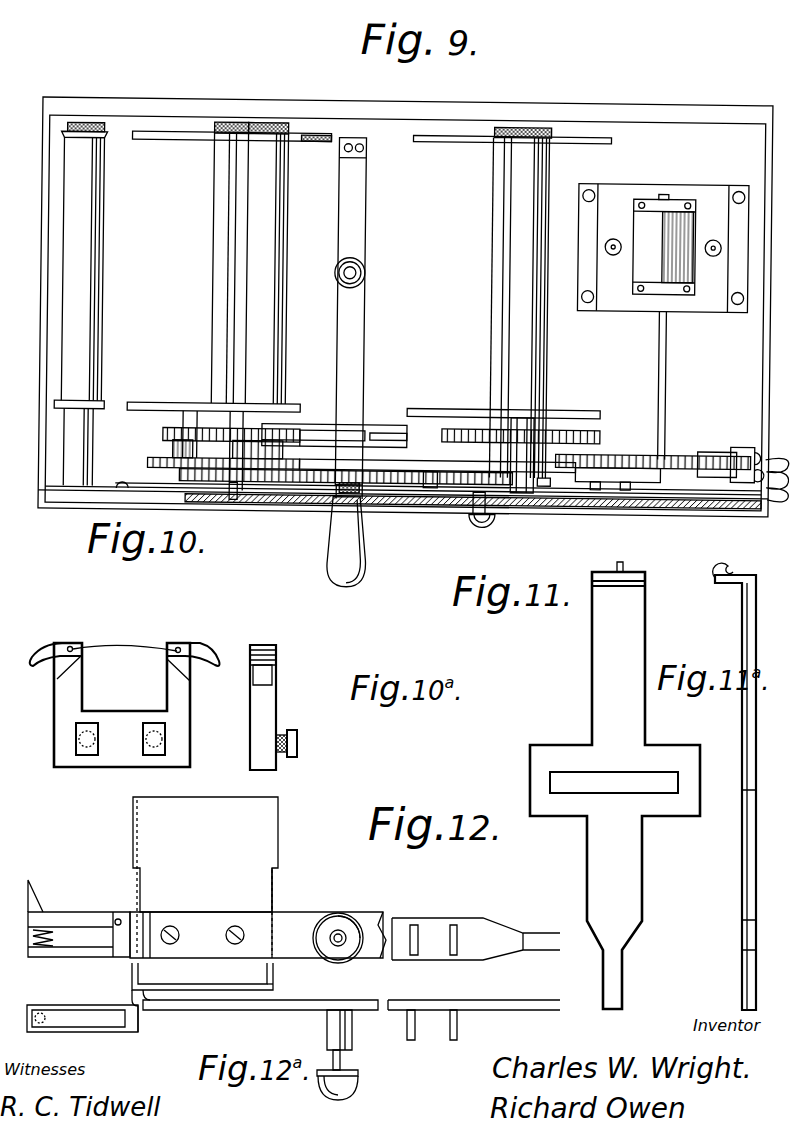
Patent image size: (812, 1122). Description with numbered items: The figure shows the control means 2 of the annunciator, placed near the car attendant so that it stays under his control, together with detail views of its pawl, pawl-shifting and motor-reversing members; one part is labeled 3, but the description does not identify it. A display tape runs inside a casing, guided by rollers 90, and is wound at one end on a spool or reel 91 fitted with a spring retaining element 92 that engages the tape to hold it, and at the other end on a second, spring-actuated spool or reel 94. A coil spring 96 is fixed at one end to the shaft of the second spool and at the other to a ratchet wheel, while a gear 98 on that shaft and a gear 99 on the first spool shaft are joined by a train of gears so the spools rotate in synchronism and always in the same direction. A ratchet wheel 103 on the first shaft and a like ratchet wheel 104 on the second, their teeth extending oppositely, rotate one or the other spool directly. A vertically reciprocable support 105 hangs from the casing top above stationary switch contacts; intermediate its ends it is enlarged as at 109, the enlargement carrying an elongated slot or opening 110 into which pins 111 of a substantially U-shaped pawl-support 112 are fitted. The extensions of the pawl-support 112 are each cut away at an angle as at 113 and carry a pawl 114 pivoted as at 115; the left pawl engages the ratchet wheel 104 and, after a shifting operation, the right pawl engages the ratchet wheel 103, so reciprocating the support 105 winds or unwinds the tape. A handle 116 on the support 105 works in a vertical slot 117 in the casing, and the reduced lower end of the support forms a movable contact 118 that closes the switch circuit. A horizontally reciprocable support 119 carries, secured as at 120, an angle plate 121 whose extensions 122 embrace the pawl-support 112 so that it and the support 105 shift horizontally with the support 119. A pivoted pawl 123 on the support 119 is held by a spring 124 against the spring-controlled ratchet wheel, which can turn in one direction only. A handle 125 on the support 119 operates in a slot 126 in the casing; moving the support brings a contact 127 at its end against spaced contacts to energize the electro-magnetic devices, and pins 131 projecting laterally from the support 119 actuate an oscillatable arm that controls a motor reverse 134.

In FIG. 9, the control means 2 is at (608, 102).
In FIG. 9, the base plate 3 is at (683, 104).
In FIG. 9, the rollers 90 is at (95, 196).
In FIG. 9, the spool or reel 91 is at (495, 245).
In FIG. 9, the spring retaining element 92 is at (230, 255).
In FIG. 9, the second spool or reel 94 is at (209, 212).
In FIG. 9, the spring 96 is at (194, 450).
In FIG. 9, the gear 98 is at (240, 490).
In FIG. 9, the gear 99 is at (545, 482).
In FIG. 9, the ratchet wheel 103 is at (562, 424).
In FIG. 9, the ratchet wheel 104 is at (272, 421).
In FIG. 11, the vertically reciprocable support 105 is at (670, 846).
In FIG. 11A, the vertically reciprocable support 105 is at (752, 623).
In FIG. 11, the enlargement 109 is at (747, 760).
In FIG. 11, the elongated slot or opening 110 is at (560, 782).
In FIG. 10, the pins 111 is at (164, 744).
In FIG. 10A, the pins 111 is at (297, 745).
In FIG. 9, the U-shaped pawl-support 112 is at (358, 416).
In FIG. 10, the U-shaped pawl-support 112 is at (70, 688).
In FIG. 10A, the U-shaped pawl-support 112 is at (262, 716).
In FIG. 10, the angular cut-away 113 is at (187, 675).
In FIG. 9, the pawl 114 is at (291, 418).
In FIG. 10, the pawl 114 is at (50, 652).
In FIG. 10A, the pawl 114 is at (262, 659).
In FIG. 10, the pivot 115 is at (160, 648).
In FIG. 9, the handle 116 is at (362, 566).
In FIG. 9, the vertical slot 117 is at (334, 498).
In FIG. 11, the movable contact 118 is at (742, 973).
In FIG. 9, the horizontally reciprocable support 119 is at (563, 452).
In FIG. 12, the horizontally reciprocable support 119 is at (303, 920).
In FIG. 12A, the horizontally reciprocable support 119 is at (233, 977).
In FIG. 9, the securing point 120 is at (749, 438).
In FIG. 12, the securing point 120 is at (163, 934).
In FIG. 9, the angle plate 121 is at (391, 456).
In FIG. 12, the angle plate 121 is at (273, 878).
In FIG. 12A, the angle plate 121 is at (282, 970).
In FIG. 12, the extensions 122 is at (133, 832).
In FIG. 12A, the extensions 122 is at (132, 975).
In FIG. 12, the pivoted pawl 123 is at (75, 912).
In FIG. 12A, the pivoted pawl 123 is at (90, 1017).
In FIG. 12, the spring 124 is at (48, 950).
In FIG. 9, the handle 125 is at (484, 516).
In FIG. 12, the handle 125 is at (357, 914).
In FIG. 12A, the handle 125 is at (360, 1085).
In FIG. 9, the slot 126 is at (540, 488).
In FIG. 12, the contact 127 is at (540, 1003).
In FIG. 12, the pins 131 is at (420, 924).
In FIG. 12A, the pins 131 is at (435, 1033).
In FIG. 9, the motor reverse 134 is at (686, 443).